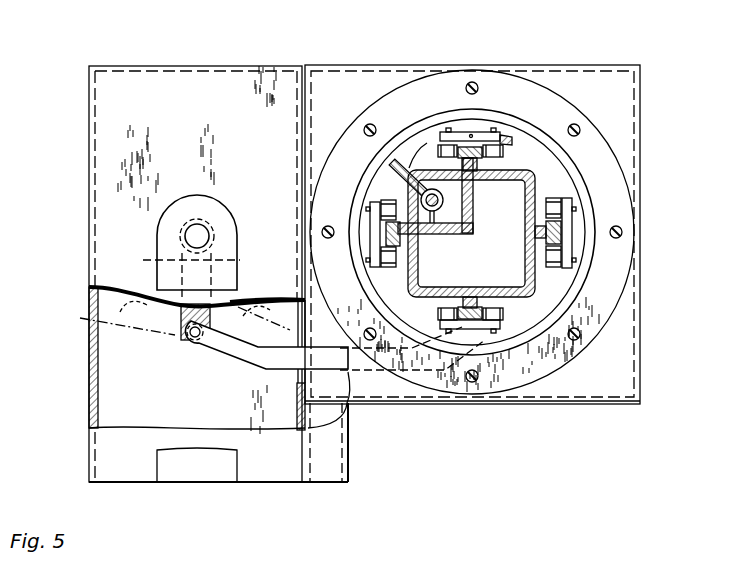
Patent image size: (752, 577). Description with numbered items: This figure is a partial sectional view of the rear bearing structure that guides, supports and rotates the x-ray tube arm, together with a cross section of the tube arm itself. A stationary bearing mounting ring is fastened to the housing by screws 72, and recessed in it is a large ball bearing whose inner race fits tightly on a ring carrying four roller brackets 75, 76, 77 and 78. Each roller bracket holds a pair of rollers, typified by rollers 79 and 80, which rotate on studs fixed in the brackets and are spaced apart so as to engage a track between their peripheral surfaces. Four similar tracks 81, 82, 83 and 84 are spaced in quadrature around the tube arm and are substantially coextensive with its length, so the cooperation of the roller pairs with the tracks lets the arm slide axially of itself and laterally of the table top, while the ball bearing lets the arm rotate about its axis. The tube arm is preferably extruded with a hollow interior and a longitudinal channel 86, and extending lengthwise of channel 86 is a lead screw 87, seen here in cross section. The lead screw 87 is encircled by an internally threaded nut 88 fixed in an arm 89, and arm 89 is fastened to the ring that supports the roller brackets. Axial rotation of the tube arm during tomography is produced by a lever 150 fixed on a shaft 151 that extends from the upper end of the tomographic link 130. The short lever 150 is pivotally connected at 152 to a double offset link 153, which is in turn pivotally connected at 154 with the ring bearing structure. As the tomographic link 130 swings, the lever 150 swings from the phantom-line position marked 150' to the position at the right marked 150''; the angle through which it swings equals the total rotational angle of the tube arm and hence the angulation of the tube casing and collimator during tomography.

The screws 72 is at (474, 82).
The roller bracket 75 is at (479, 132).
The roller bracket 76 is at (572, 210).
The roller bracket 77 is at (370, 218).
The roller bracket 78 is at (505, 322).
The roller 79 is at (445, 147).
The roller 80 is at (506, 138).
The track 81 is at (476, 165).
The track 82 is at (561, 236).
The track 83 is at (477, 300).
The track 84 is at (392, 236).
The longitudinal channel 86 is at (455, 188).
The lead screw 87 is at (442, 208).
The internally threaded nut 88 is at (433, 213).
The arm 89 is at (393, 165).
The tomographic link 130 is at (187, 205).
The lever 150 is at (197, 273).
The phantom line position of lever 150' is at (61, 357).
The position of lever at right 150'' is at (267, 277).
The shaft 151 is at (200, 230).
The pivotal connection 152 is at (188, 342).
The double offset link 153 is at (278, 366).
The pivotal connection 154 is at (476, 338).